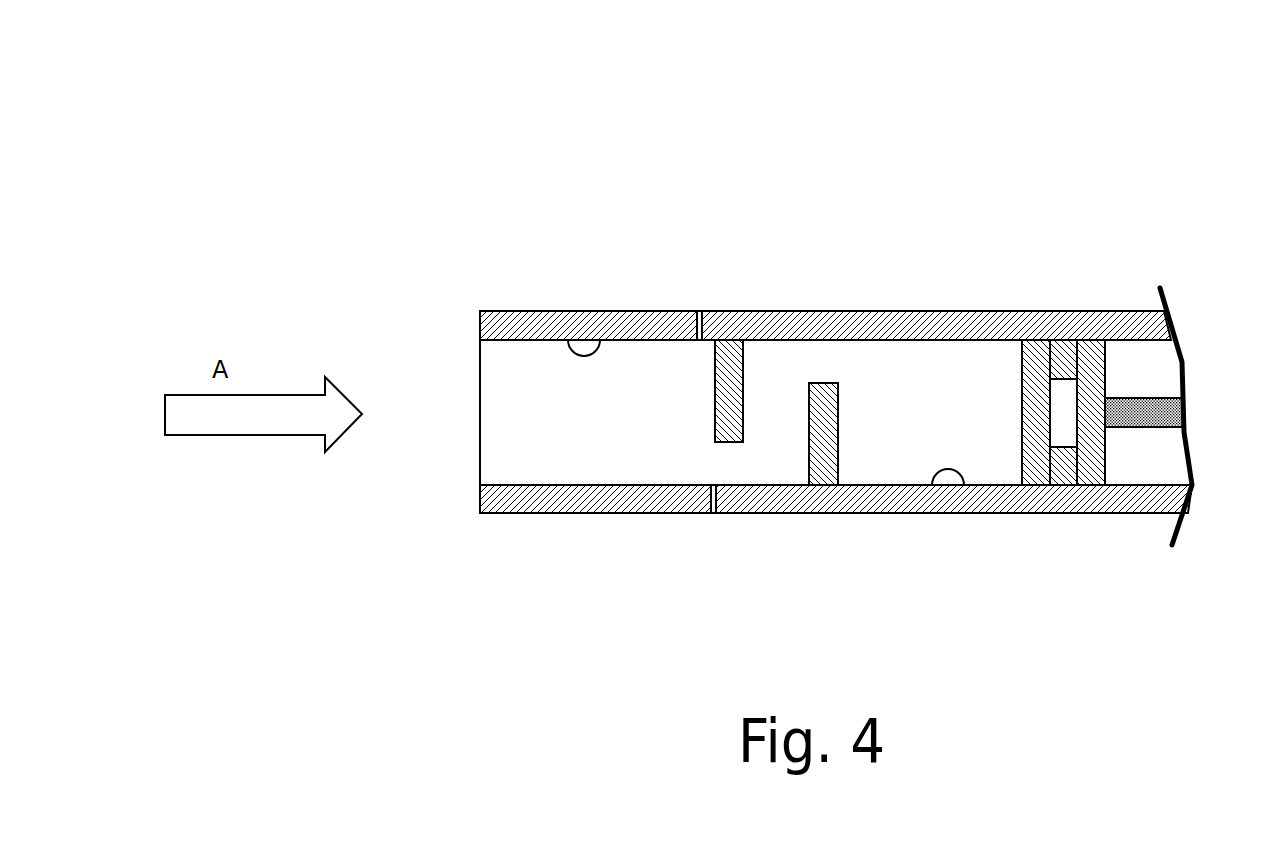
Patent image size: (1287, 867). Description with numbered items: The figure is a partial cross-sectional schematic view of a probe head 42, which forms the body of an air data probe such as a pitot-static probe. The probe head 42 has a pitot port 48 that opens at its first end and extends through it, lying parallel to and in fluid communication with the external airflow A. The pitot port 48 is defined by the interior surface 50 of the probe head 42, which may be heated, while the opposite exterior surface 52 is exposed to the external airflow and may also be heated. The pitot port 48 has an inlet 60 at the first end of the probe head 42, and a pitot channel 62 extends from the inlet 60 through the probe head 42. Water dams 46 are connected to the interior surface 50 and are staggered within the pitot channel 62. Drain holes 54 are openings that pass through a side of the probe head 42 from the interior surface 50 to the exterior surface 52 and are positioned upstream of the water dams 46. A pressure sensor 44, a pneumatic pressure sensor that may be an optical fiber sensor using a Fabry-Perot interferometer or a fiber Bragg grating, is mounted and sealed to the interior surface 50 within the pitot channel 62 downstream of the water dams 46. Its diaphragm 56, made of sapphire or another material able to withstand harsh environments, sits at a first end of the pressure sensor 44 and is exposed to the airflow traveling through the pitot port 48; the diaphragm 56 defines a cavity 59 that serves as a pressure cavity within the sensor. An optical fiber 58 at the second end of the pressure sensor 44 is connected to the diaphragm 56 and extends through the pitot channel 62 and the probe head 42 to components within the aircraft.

The probe head 42 is at (781, 333).
The pressure sensor 44 is at (1090, 368).
The water dams 46 is at (729, 365).
The pitot port 48 is at (757, 527).
The interior surface 50 is at (600, 340).
The exterior surface 52 is at (523, 311).
The drain holes 54 is at (697, 327).
The diaphragm 56 is at (1025, 397).
The optical fiber 58 is at (1148, 415).
The cavity 59 is at (1062, 420).
The inlet 60 is at (480, 368).
The pitot channel 62 is at (963, 480).